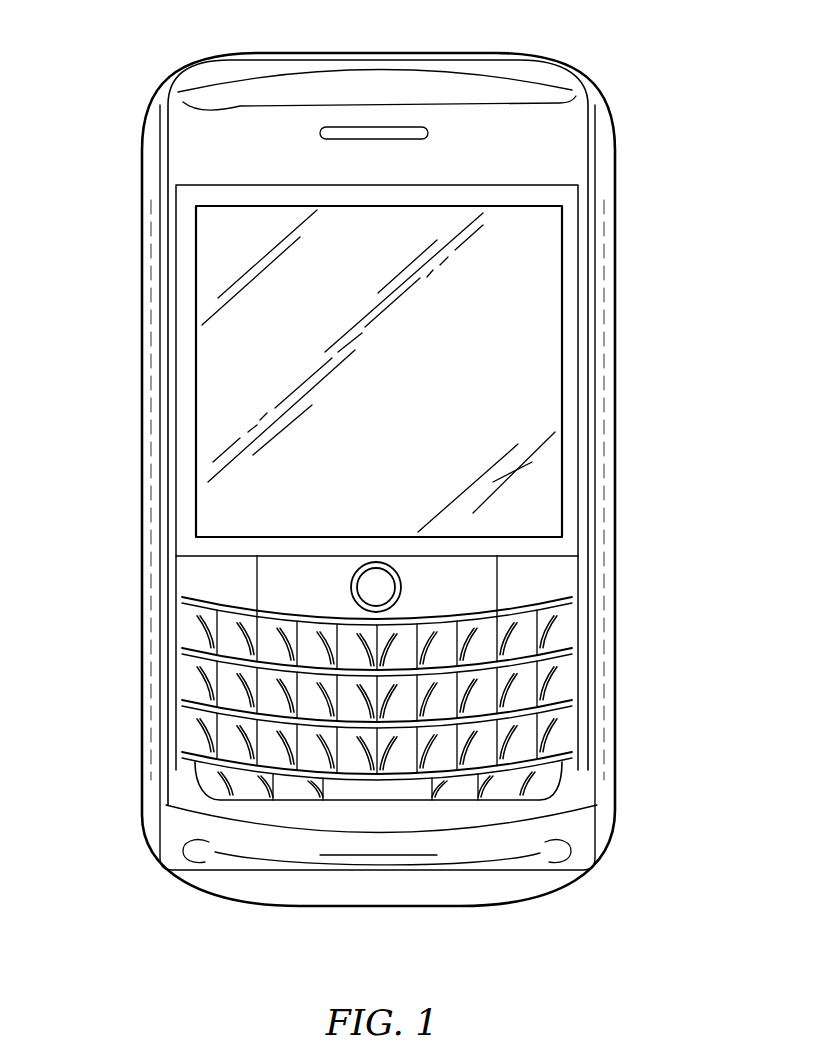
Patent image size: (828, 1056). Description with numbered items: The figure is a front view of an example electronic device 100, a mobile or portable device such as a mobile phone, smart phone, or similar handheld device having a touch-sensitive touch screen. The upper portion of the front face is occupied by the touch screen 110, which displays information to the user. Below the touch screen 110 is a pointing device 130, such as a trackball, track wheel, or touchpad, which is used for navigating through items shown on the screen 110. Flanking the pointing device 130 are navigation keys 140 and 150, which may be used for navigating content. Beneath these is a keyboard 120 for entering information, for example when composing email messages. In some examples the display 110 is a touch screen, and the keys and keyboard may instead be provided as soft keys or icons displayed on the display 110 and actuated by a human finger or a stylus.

The electronic device 100 is at (386, 459).
The touch screen 110 is at (482, 368).
The keyboard 120 is at (197, 730).
The pointing device 130 is at (352, 575).
The navigation key 140 is at (224, 583).
The navigation key 150 is at (538, 582).